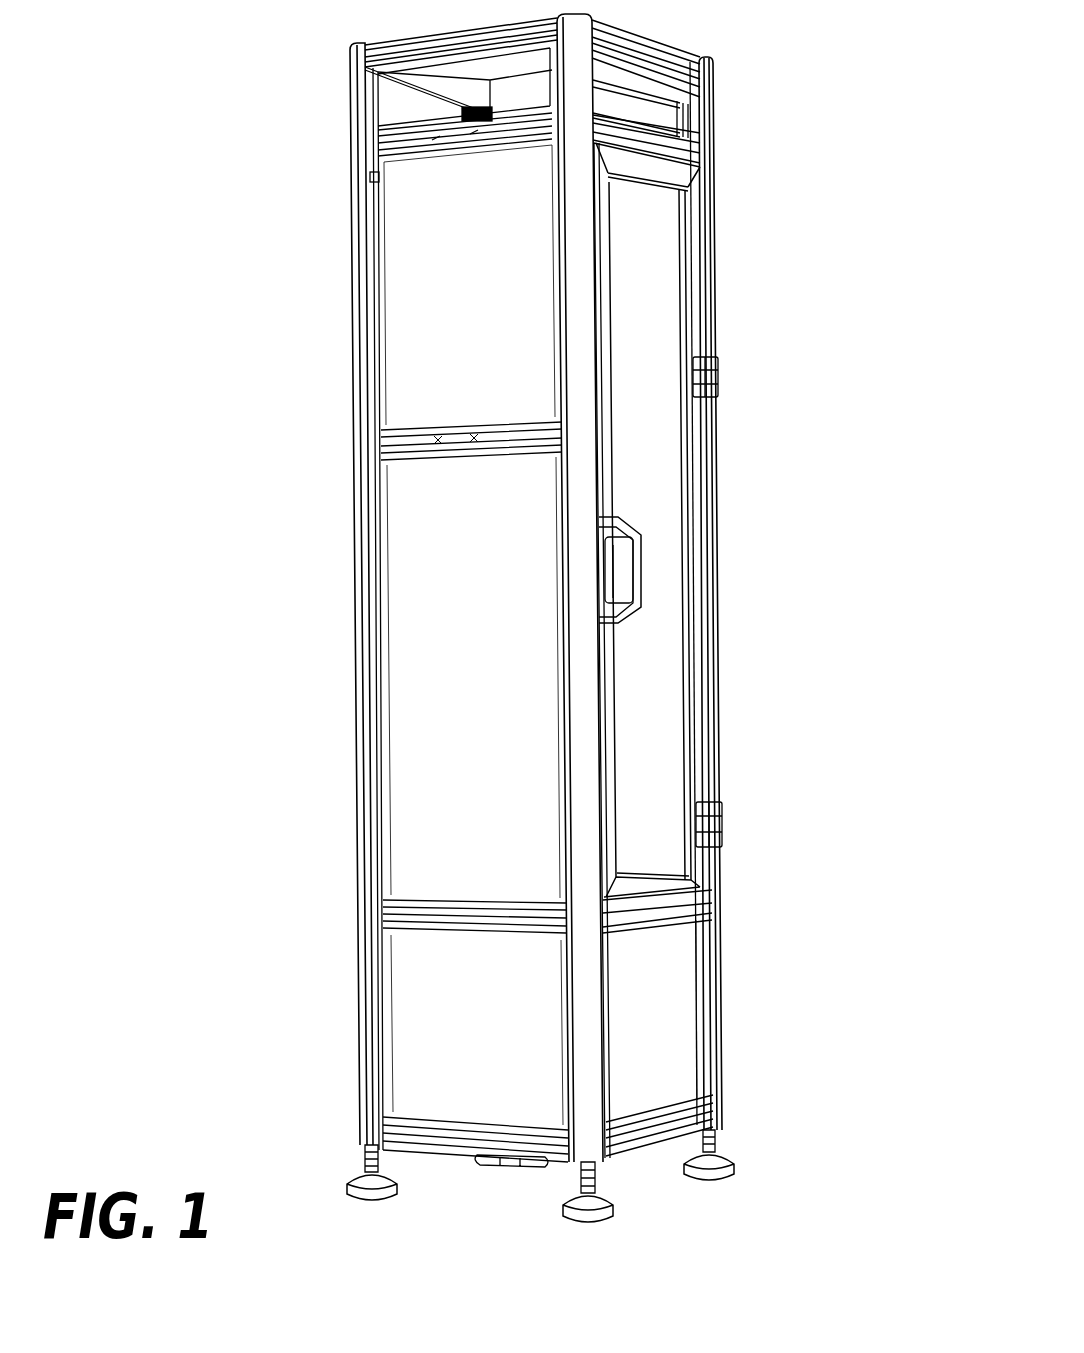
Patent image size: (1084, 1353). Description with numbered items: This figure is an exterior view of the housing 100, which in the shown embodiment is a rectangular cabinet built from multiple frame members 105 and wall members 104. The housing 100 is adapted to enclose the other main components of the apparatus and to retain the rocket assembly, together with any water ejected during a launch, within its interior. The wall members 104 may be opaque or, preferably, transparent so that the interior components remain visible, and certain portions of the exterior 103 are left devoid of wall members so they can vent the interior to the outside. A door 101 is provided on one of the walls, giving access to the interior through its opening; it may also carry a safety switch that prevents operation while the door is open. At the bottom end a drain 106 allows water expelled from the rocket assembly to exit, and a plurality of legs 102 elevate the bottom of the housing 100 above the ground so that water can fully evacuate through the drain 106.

The housing 100 is at (178, 301).
The door 101 is at (636, 578).
The legs 102 is at (730, 1152).
The portions of the exterior 103 is at (417, 115).
The wall members 104 is at (420, 320).
The frame members 105 is at (413, 465).
The drain 106 is at (532, 1163).